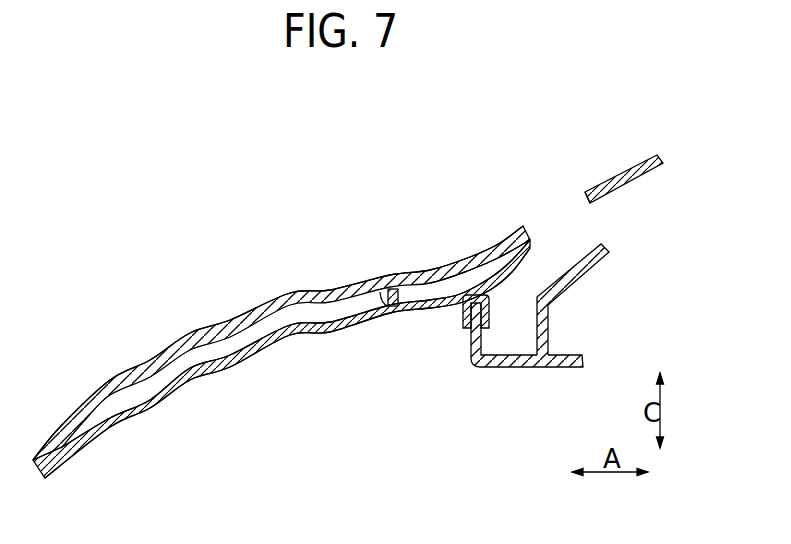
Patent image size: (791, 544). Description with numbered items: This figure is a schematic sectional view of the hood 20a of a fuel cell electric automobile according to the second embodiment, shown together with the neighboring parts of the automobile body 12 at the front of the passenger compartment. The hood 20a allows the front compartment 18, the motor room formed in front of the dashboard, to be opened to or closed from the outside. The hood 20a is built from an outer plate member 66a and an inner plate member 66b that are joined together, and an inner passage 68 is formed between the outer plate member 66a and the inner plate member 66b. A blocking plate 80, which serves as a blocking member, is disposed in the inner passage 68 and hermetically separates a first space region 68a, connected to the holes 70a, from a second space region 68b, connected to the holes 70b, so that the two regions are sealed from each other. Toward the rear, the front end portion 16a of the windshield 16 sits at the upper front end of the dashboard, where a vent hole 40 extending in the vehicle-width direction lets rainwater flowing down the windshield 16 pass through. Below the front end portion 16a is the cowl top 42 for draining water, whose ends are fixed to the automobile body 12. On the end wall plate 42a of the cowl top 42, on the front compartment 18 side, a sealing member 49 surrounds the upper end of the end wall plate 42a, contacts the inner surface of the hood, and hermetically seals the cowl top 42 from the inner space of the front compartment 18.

The automobile body 12 is at (281, 306).
The windshield 16 is at (610, 185).
The front end portion of the windshield 16a is at (585, 198).
The front compartment 18 is at (346, 400).
The hood 20a is at (193, 332).
The vent hole 40 is at (563, 276).
The cowl top 42 is at (518, 268).
The end wall plate 42a is at (470, 347).
The sealing member 49 is at (466, 312).
The outer plate member 66a is at (281, 295).
The inner plate member 66b is at (363, 322).
The inner passage 68 is at (281, 295).
The first space region 68a is at (318, 308).
The second space region 68b is at (422, 290).
The holes 70a is at (157, 391).
The holes 70b is at (482, 282).
The blocking plate 80 is at (377, 288).